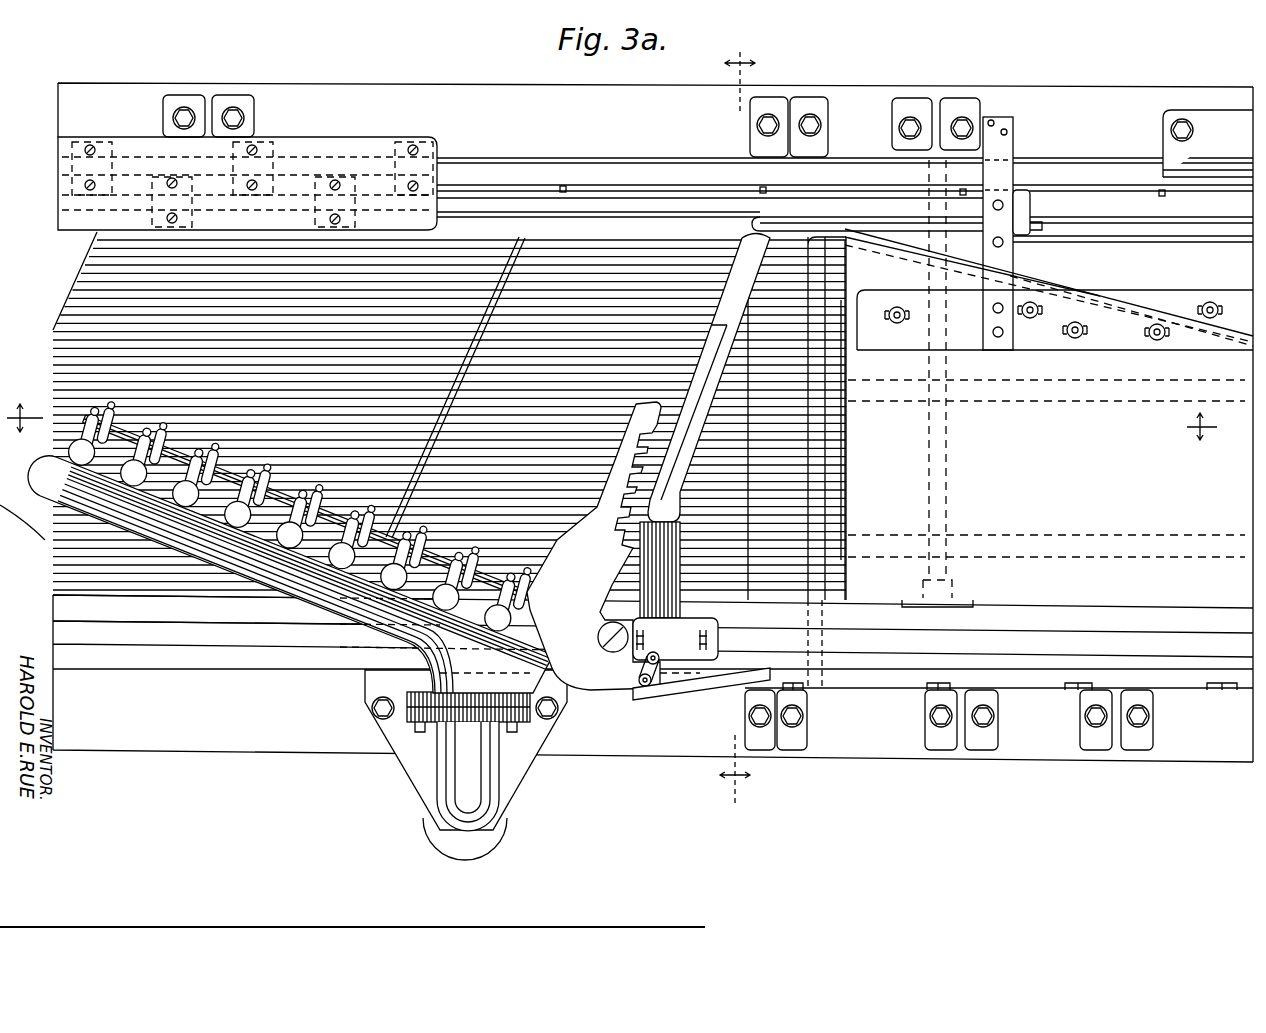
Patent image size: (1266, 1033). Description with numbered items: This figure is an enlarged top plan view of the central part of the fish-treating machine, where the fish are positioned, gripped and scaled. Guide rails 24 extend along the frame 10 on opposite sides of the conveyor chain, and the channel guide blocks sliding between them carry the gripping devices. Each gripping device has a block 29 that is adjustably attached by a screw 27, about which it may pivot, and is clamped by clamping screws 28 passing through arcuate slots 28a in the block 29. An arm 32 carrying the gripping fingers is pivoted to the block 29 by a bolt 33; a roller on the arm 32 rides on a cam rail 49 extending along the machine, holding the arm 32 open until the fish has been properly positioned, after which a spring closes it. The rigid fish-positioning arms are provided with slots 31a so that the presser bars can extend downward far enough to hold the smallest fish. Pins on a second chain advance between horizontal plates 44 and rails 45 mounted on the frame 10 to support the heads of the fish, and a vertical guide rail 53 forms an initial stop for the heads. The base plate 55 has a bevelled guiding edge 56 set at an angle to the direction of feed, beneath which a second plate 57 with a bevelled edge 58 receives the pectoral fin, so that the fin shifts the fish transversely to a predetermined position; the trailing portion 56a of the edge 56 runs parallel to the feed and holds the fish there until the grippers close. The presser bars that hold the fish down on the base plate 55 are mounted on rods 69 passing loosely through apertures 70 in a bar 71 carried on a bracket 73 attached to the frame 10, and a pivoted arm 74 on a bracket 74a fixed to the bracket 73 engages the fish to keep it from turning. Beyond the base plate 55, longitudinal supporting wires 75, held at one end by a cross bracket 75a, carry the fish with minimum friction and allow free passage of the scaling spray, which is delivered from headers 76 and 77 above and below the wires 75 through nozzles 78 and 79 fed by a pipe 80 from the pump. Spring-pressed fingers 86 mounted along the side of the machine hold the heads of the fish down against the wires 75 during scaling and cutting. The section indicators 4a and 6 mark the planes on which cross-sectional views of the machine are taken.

The frame 10 is at (676, 93).
The guide rails 24 is at (197, 617).
The screw 27 is at (670, 644).
The clamping screws 28 is at (710, 643).
The arcuate slots 28a is at (706, 629).
The block 29 is at (690, 668).
The slots 31a is at (727, 297).
The arm 32 is at (594, 546).
The bolt 33 is at (608, 627).
The horizontal plates 44 is at (1128, 212).
The rails 45 is at (710, 193).
The cam rail 49 is at (735, 683).
The vertical guide rail 53 is at (1197, 115).
The base plate 55 is at (1045, 383).
The bevelled guiding edge 56 is at (1120, 294).
The trailing portion 56a is at (1049, 282).
The second plate 57 is at (1131, 291).
The bevelled edge 58 is at (1090, 294).
The rods 69 is at (897, 307).
The apertures 70 is at (893, 325).
The bar 71 is at (1196, 341).
The bracket 73 is at (983, 282).
The pivoted arm 74 is at (752, 228).
The bracket 74a is at (1020, 208).
The longitudinal supporting wires 75 is at (620, 268).
The cross bracket 75a is at (845, 461).
The header 76 is at (56, 480).
The header 77 is at (70, 438).
The nozzles 78 is at (108, 412).
The nozzles 79 is at (122, 410).
The pipe 80 is at (455, 790).
The spring-pressed fingers 86 is at (455, 160).
The section line 4a is at (624, 422).
The section line 6 is at (737, 421).